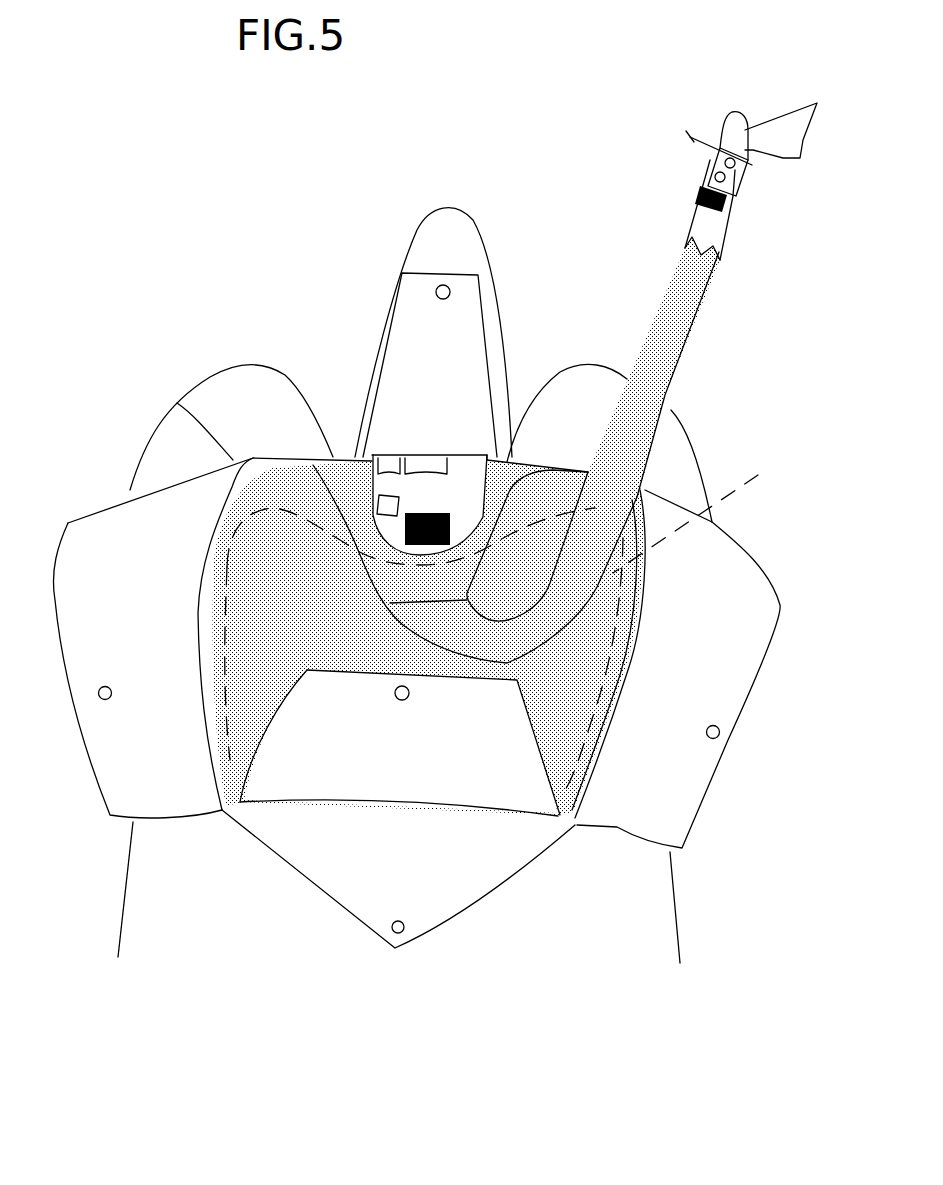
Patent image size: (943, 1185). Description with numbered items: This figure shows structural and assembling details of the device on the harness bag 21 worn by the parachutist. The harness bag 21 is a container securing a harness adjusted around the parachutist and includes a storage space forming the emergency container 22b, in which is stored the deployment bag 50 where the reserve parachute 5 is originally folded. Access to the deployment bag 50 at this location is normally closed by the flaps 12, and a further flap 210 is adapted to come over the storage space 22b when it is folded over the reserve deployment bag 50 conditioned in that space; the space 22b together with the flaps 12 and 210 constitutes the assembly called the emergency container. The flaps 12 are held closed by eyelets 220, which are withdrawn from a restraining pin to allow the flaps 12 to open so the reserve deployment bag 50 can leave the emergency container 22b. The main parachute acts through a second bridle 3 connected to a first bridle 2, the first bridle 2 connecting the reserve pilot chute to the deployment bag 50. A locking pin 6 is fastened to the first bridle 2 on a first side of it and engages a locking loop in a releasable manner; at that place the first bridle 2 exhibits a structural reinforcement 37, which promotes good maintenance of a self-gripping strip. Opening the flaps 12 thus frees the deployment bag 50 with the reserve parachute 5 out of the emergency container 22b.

The first bridle 2 is at (780, 127).
The second bridle 3 is at (722, 122).
The reserve parachute 5 is at (507, 622).
The locking pin 6 is at (743, 173).
The flaps 12 is at (430, 233).
The harness bag 21 is at (123, 466).
The emergency container 22b is at (630, 667).
The structural reinforcement 37 is at (738, 178).
The deployment bag 50 is at (273, 487).
The flap 210 is at (465, 468).
The eyelets 220 is at (447, 297).